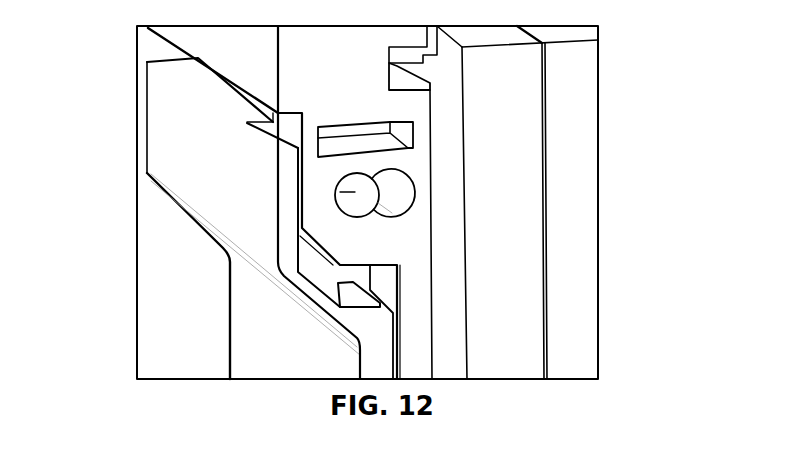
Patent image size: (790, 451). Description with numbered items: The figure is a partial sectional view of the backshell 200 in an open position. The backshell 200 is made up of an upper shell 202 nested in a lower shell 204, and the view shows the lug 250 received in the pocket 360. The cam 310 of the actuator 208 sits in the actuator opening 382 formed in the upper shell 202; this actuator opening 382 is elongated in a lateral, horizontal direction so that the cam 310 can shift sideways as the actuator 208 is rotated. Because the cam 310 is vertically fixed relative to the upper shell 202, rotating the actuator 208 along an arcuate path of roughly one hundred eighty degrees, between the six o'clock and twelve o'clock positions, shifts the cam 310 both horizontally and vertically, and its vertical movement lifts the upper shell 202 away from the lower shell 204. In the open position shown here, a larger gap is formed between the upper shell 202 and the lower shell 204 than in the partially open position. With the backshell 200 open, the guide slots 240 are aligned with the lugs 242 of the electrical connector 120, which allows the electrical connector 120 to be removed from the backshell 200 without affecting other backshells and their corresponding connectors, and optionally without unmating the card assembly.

The electrical connector 120 is at (525, 155).
The backshell 200 is at (112, 115).
The upper shell 202 is at (190, 36).
The lower shell 204 is at (180, 168).
The actuator 208 is at (365, 205).
The guide slot 240 is at (400, 78).
The lug 242 is at (440, 53).
The lug 250 is at (325, 180).
The cam 310 is at (368, 172).
The pocket 360 is at (334, 276).
The actuator opening 382 is at (387, 170).